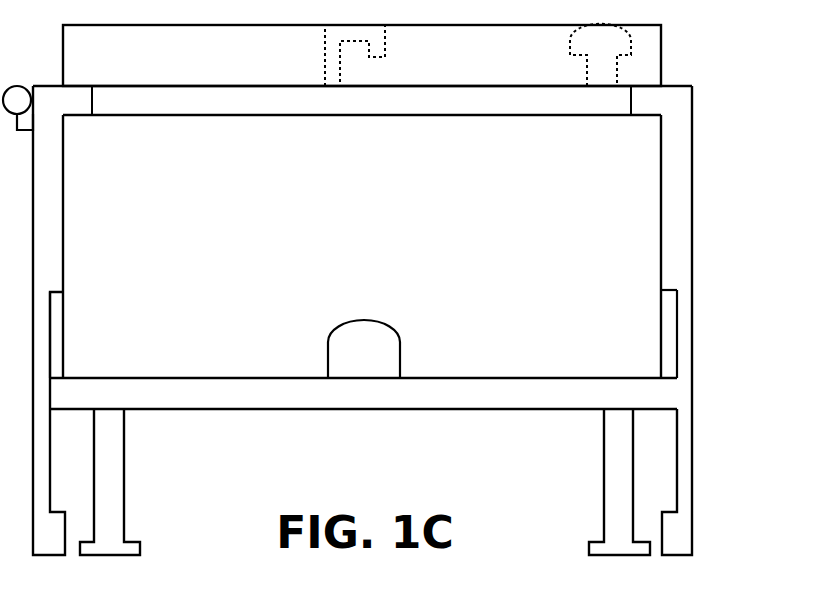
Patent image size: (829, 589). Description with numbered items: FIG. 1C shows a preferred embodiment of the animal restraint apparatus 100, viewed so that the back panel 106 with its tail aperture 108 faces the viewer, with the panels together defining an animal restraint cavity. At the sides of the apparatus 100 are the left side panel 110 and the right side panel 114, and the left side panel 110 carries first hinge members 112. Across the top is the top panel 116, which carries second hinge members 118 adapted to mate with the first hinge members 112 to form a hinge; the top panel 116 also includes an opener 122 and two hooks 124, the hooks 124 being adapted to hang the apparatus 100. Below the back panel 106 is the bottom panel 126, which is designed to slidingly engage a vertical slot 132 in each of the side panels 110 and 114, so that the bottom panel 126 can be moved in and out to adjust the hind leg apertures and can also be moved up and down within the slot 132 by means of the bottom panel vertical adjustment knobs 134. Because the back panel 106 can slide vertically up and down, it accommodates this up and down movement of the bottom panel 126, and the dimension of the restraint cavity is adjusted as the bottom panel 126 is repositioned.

The animal restraint apparatus 100 is at (723, 205).
The back panel 106 is at (362, 201).
The tail aperture 108 is at (364, 394).
The left side panel 110 is at (50, 375).
The first hinge members 112 is at (27, 128).
The right side panel 114 is at (693, 255).
The top panel 116 is at (362, 100).
The second hinge members 118 is at (19, 103).
The opener 122 is at (617, 41).
The hooks 124 is at (377, 38).
The bottom panel 126 is at (363, 393).
The vertical slot 132 is at (670, 343).
The bottom panel vertical adjustment knobs 134 is at (107, 533).